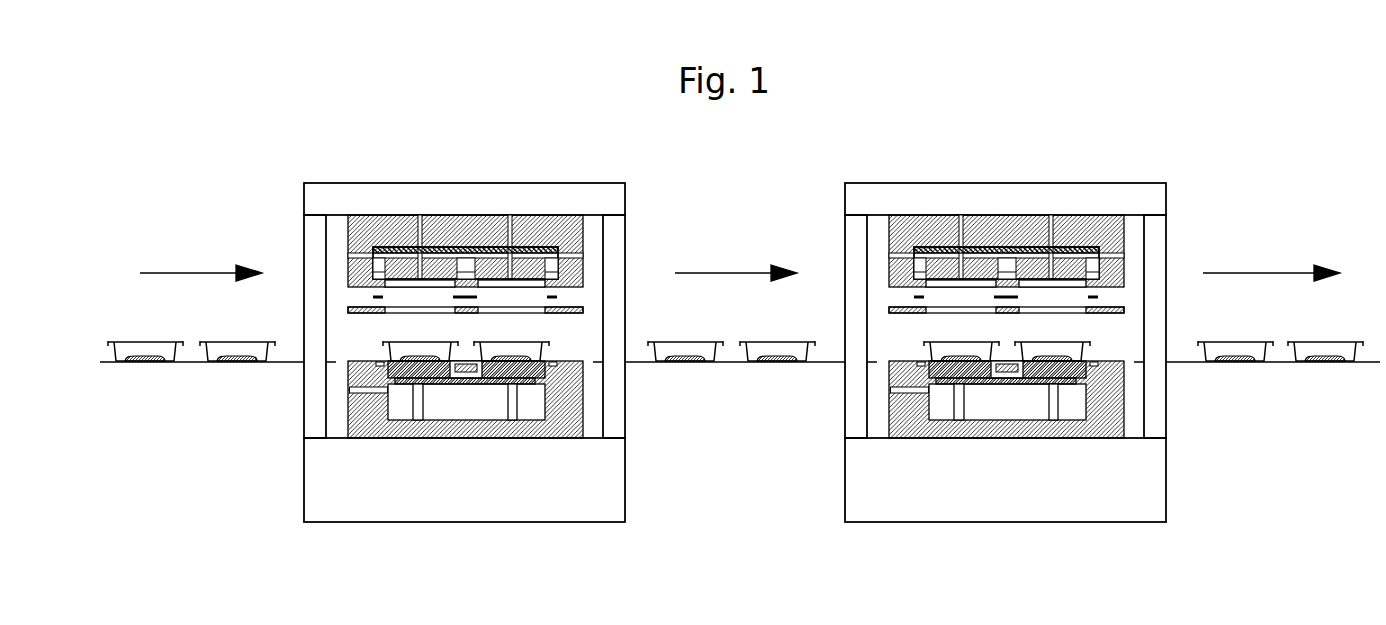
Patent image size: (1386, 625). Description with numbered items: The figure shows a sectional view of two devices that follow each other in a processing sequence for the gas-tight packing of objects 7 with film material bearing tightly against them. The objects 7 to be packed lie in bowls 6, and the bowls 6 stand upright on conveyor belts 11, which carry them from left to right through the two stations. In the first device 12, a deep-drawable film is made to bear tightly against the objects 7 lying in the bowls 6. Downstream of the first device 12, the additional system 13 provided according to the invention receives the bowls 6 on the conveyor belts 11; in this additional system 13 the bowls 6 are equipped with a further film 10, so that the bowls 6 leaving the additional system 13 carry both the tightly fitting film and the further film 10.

The bowls 6 is at (117, 344).
The objects 7 is at (155, 363).
The further film 10 is at (637, 363).
The conveyor belts 11 is at (108, 363).
The first device 12 is at (362, 168).
The additional system 13 is at (1133, 168).